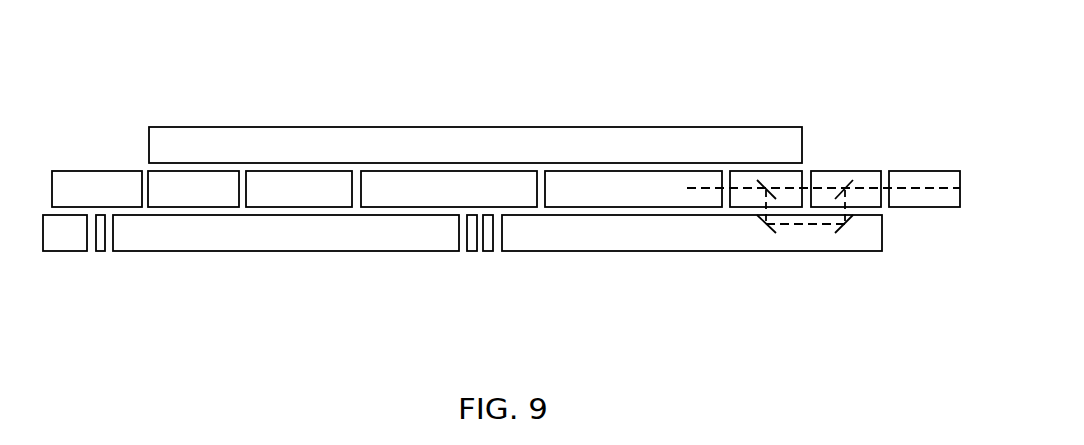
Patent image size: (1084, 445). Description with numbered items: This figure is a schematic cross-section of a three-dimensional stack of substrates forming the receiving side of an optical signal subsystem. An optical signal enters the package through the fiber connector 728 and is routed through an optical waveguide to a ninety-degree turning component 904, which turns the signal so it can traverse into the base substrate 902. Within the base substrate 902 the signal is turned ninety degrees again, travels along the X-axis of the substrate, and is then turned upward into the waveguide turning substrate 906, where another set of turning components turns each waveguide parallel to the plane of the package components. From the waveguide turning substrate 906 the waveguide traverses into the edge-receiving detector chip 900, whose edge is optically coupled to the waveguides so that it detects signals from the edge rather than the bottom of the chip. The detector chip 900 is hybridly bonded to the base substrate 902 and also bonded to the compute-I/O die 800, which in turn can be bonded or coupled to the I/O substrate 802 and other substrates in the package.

The compute-I/O die 800 is at (475, 145).
The I/O substrate 802 is at (449, 189).
The edge-receiving detector chip 900 is at (635, 171).
The base substrate 902 is at (625, 252).
The 90-degree turning component 904 is at (862, 171).
The waveguide turning substrate 906 is at (779, 171).
The fiber connector 728 is at (942, 207).